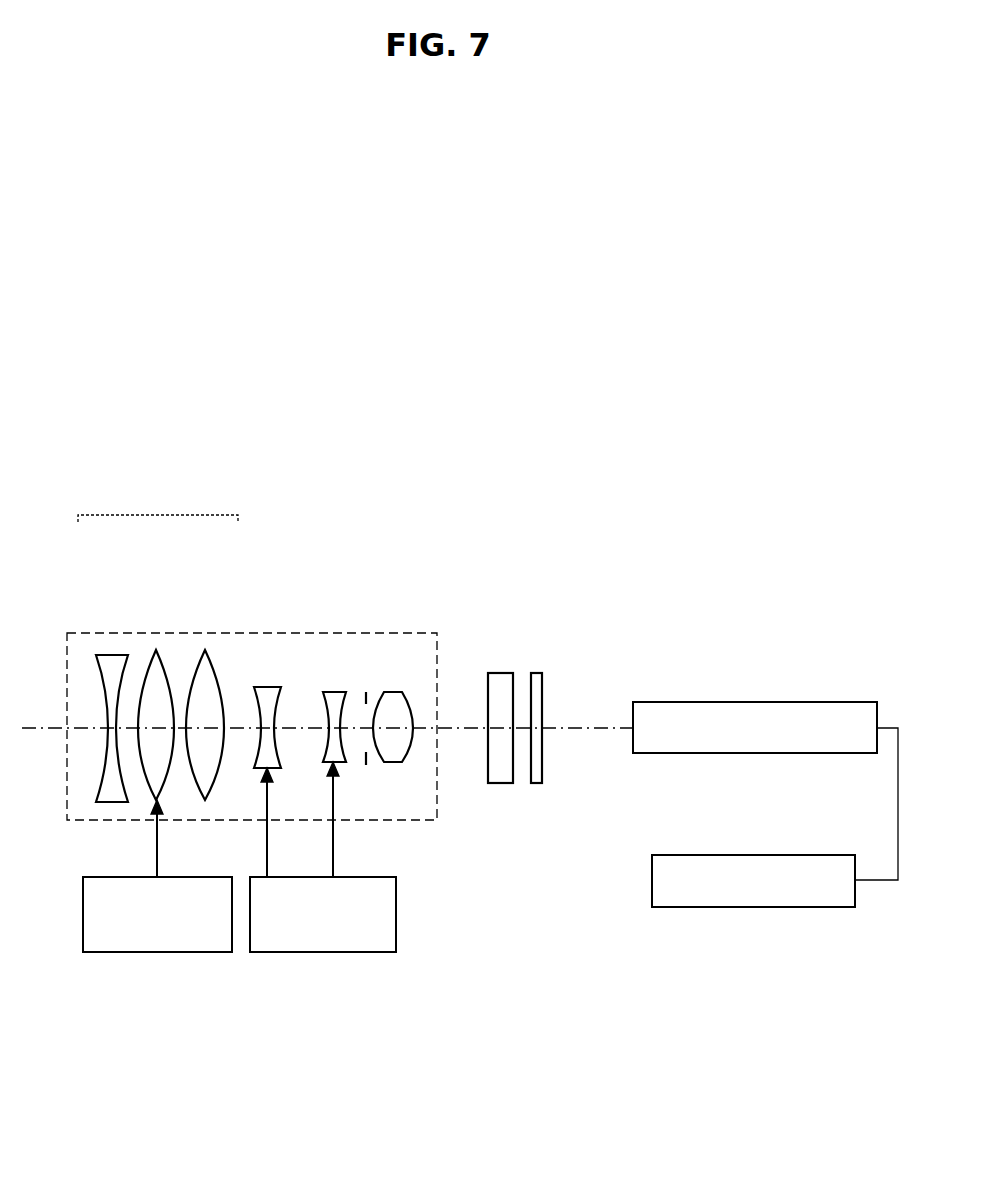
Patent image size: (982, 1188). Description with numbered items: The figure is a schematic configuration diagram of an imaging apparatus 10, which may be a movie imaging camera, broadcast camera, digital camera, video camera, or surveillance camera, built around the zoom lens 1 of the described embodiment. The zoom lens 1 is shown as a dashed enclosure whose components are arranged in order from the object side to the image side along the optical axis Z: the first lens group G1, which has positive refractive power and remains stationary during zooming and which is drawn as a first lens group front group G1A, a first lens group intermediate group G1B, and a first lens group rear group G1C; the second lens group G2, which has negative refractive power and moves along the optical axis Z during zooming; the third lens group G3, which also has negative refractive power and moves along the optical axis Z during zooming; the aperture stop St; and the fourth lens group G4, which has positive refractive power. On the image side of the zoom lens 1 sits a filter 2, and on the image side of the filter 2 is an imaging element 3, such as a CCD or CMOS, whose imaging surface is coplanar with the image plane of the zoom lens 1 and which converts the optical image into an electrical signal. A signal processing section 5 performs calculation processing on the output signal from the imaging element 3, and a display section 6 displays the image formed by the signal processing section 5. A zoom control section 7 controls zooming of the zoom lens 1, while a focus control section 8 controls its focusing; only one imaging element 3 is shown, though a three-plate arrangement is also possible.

The imaging apparatus 10 is at (383, 500).
The zoom lens 1 is at (75, 820).
The optical axis Z is at (36, 728).
The first lens group G1 is at (158, 641).
The first lens group front group G1A is at (114, 655).
The first lens group intermediate group G1B is at (160, 650).
The first lens group rear group G1C is at (212, 650).
The second lens group G2 is at (266, 687).
The third lens group G3 is at (334, 692).
The fourth lens group G4 is at (392, 692).
The aperture stop St is at (366, 692).
The filter 2 is at (498, 673).
The imaging element 3 is at (538, 673).
The signal processing section 5 is at (812, 702).
The display section 6 is at (812, 855).
The zoom control section 7 is at (373, 952).
The focus control section 8 is at (208, 952).